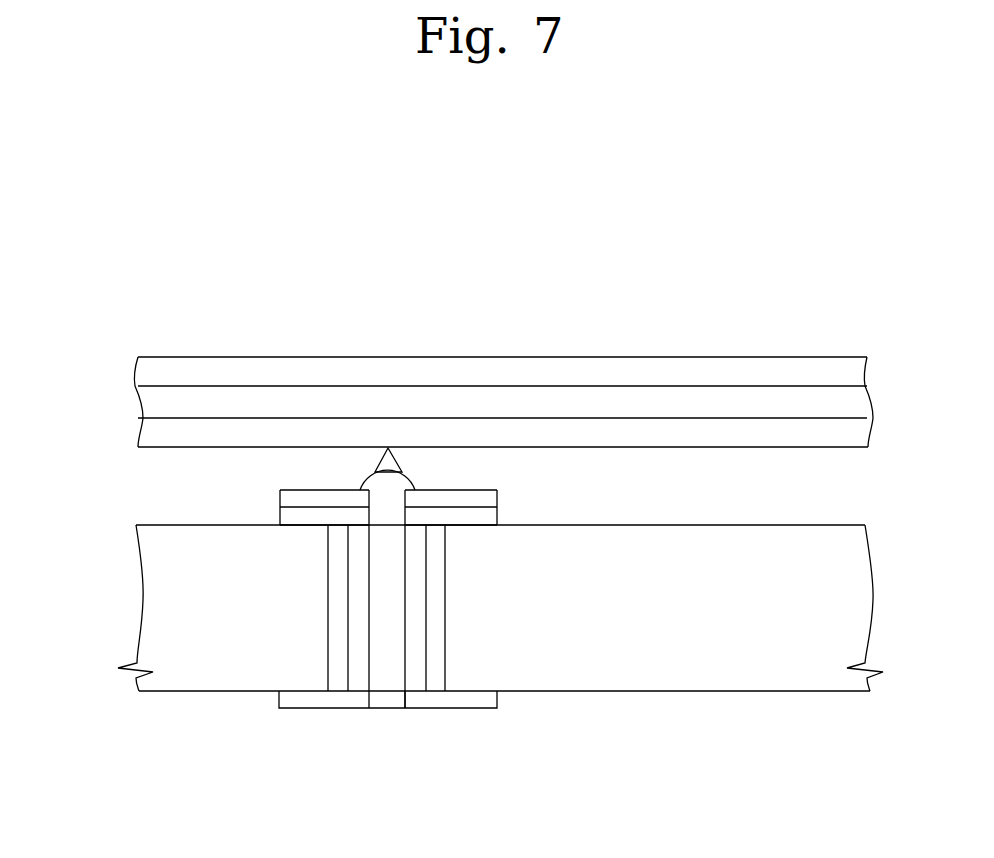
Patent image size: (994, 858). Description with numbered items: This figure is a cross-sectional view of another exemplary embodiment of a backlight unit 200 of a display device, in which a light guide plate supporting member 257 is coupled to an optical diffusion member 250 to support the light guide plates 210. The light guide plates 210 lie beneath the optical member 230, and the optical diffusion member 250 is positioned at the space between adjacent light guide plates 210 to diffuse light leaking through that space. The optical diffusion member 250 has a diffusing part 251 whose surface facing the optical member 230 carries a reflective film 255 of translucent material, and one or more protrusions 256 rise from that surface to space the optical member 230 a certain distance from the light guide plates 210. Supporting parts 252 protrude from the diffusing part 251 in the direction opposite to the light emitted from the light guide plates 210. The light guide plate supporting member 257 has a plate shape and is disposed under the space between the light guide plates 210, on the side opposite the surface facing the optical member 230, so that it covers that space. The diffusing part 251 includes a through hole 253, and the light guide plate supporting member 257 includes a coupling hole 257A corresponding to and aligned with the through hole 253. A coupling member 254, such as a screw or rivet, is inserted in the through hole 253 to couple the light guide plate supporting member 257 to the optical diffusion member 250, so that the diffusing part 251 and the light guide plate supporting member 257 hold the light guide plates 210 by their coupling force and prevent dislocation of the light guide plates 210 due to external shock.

The backlight unit 200 is at (740, 279).
The light guide plates 210 is at (153, 617).
The optical member 230 is at (153, 405).
The optical diffusion member 250 is at (497, 503).
The diffusing part 251 is at (280, 518).
The supporting parts 252 is at (357, 678).
The through hole 253 is at (368, 516).
The coupling member 254 is at (386, 697).
The reflective film 255 is at (280, 498).
The protrusions 256 is at (390, 447).
The light guide plate supporting member 257 is at (458, 702).
The coupling hole 257A is at (405, 699).